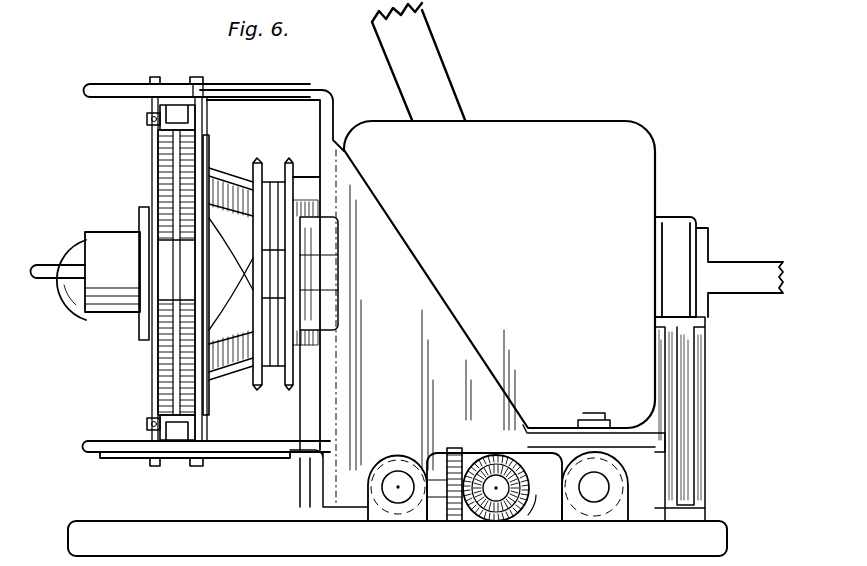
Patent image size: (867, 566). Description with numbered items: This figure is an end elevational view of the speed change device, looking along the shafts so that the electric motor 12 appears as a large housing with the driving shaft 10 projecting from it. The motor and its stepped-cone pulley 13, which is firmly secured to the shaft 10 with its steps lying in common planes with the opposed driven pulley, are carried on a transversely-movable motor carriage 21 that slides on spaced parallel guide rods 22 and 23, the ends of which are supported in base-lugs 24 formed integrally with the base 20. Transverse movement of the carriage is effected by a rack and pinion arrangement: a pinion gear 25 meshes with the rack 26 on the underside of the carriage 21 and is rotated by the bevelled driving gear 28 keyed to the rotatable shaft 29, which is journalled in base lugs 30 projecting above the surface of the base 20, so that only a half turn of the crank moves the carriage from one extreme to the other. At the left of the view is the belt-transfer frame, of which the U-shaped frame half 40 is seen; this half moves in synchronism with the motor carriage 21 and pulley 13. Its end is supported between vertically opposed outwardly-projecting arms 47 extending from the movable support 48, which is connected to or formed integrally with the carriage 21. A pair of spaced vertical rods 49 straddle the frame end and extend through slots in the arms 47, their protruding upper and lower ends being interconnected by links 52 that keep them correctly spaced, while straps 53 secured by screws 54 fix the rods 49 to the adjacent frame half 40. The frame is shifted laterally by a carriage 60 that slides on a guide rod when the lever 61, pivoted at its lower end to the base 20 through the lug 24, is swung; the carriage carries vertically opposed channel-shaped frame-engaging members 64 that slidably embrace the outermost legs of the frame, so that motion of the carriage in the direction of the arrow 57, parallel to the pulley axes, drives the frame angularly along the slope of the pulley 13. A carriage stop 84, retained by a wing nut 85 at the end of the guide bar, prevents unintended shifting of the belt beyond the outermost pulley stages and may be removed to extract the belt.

The driving shaft 10 is at (765, 292).
The electric motor 12 is at (562, 206).
The stepped-cone pulley 13 is at (297, 167).
The base 20 is at (95, 521).
The motor carriage 21 is at (665, 447).
The guide rod 22 is at (594, 487).
The guide rod 23 is at (397, 482).
The base-lug 24 is at (398, 463).
The pinion gear 25 is at (466, 505).
The rack 26 is at (455, 448).
The bevelled driving gear 28 is at (533, 478).
The rotatable shaft 29 is at (440, 500).
The base lug 30 is at (530, 515).
The U-shaped frame half 40 is at (178, 353).
The outwardly-projecting arm 47 is at (95, 90).
The movable support 48 is at (338, 237).
The vertical rod 49 is at (197, 78).
The link 52 is at (152, 77).
The strap 53 is at (148, 118).
The screw 54 is at (148, 123).
The arrow 57 is at (148, 163).
The carriage 60 is at (244, 180).
The lever 61 is at (418, 61).
The frame-engaging member 64 is at (210, 133).
The carriage stop 84 is at (112, 272).
The wing nut 85 is at (72, 262).